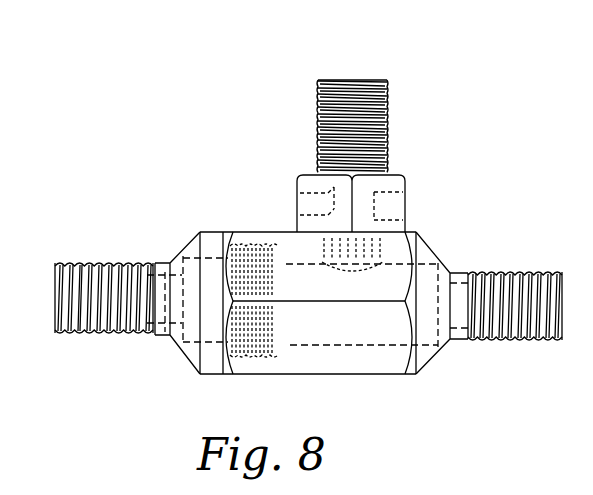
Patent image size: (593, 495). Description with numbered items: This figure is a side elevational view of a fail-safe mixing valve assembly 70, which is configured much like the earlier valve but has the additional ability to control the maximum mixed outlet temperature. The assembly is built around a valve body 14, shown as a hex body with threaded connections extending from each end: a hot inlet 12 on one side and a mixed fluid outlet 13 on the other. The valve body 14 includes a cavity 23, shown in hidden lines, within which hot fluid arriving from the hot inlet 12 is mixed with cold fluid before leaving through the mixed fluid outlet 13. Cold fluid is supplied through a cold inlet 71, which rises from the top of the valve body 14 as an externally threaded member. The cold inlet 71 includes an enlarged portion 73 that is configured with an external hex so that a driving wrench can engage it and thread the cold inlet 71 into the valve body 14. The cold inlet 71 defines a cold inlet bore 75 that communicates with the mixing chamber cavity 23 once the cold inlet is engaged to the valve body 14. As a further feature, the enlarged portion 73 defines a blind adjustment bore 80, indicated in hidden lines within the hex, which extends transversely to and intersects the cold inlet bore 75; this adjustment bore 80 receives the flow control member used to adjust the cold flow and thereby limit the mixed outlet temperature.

The hot inlet 12 is at (462, 270).
The mixed fluid outlet 13 is at (160, 263).
The valve body 14 is at (302, 355).
The cavity 23 is at (358, 318).
The mixing valve assembly 70 is at (308, 234).
The cold inlet 71 is at (391, 99).
The enlarged portion 73 is at (395, 184).
The cold inlet bore 75 is at (358, 78).
The adjustment bore 80 is at (408, 190).